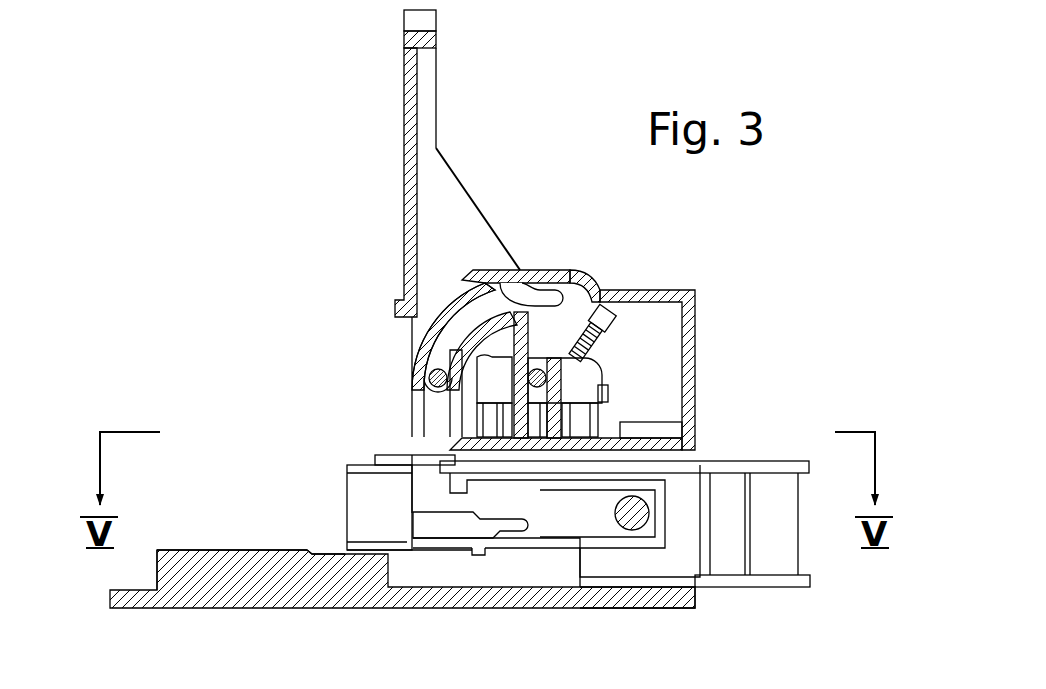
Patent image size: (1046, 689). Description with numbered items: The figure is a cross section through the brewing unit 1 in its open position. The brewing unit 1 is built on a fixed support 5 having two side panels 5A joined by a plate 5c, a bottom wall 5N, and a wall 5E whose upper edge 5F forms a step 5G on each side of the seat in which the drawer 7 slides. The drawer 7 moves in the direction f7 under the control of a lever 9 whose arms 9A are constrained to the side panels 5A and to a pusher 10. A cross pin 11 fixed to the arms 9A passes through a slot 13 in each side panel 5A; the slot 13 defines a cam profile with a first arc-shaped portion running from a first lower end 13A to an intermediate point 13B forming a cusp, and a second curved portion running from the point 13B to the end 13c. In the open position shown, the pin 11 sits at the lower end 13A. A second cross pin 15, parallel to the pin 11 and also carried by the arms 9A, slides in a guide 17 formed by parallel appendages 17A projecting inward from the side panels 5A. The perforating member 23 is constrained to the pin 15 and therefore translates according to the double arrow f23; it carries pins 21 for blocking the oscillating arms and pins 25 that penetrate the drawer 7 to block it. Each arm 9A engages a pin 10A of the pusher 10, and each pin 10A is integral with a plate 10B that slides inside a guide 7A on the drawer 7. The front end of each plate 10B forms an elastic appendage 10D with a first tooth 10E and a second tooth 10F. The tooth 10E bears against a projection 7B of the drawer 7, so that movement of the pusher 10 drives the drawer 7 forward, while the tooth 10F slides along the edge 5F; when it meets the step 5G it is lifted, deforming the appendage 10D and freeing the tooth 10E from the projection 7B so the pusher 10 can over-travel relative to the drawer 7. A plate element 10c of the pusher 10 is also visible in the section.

The brewing unit 1 is at (303, 172).
The support 5 is at (94, 590).
The side panel 5A is at (690, 352).
The plate 5c is at (690, 443).
The wall 5E is at (168, 555).
The upper edge 5F is at (228, 548).
The step 5G is at (310, 553).
The bottom wall 5N is at (634, 600).
The drawer 7 is at (766, 442).
The guide 7A is at (603, 495).
The projection 7B is at (408, 545).
The lever 9 is at (455, 72).
The arm 9A is at (452, 206).
The pusher 10 is at (436, 470).
The pin 10A is at (650, 513).
The plate 10B is at (595, 528).
The body upper plate 10c is at (430, 442).
The elastic appendage 10D is at (458, 540).
The first tooth 10E is at (417, 548).
The second tooth 10F is at (490, 555).
The cross pin 11 is at (430, 385).
The slot 13 is at (483, 304).
The first lower end 13A is at (420, 395).
The intermediate point 13B is at (516, 300).
The end 13c is at (576, 303).
The second cross pin 15 is at (565, 380).
The guide 17 is at (575, 429).
The appendage 17A is at (526, 364).
The pin 21 is at (492, 412).
The perforating member 23 is at (606, 358).
The pin 25 is at (606, 397).
The direction of movement of the drawer f7 is at (272, 408).
The double arrow of perforating member movement f23 is at (713, 248).